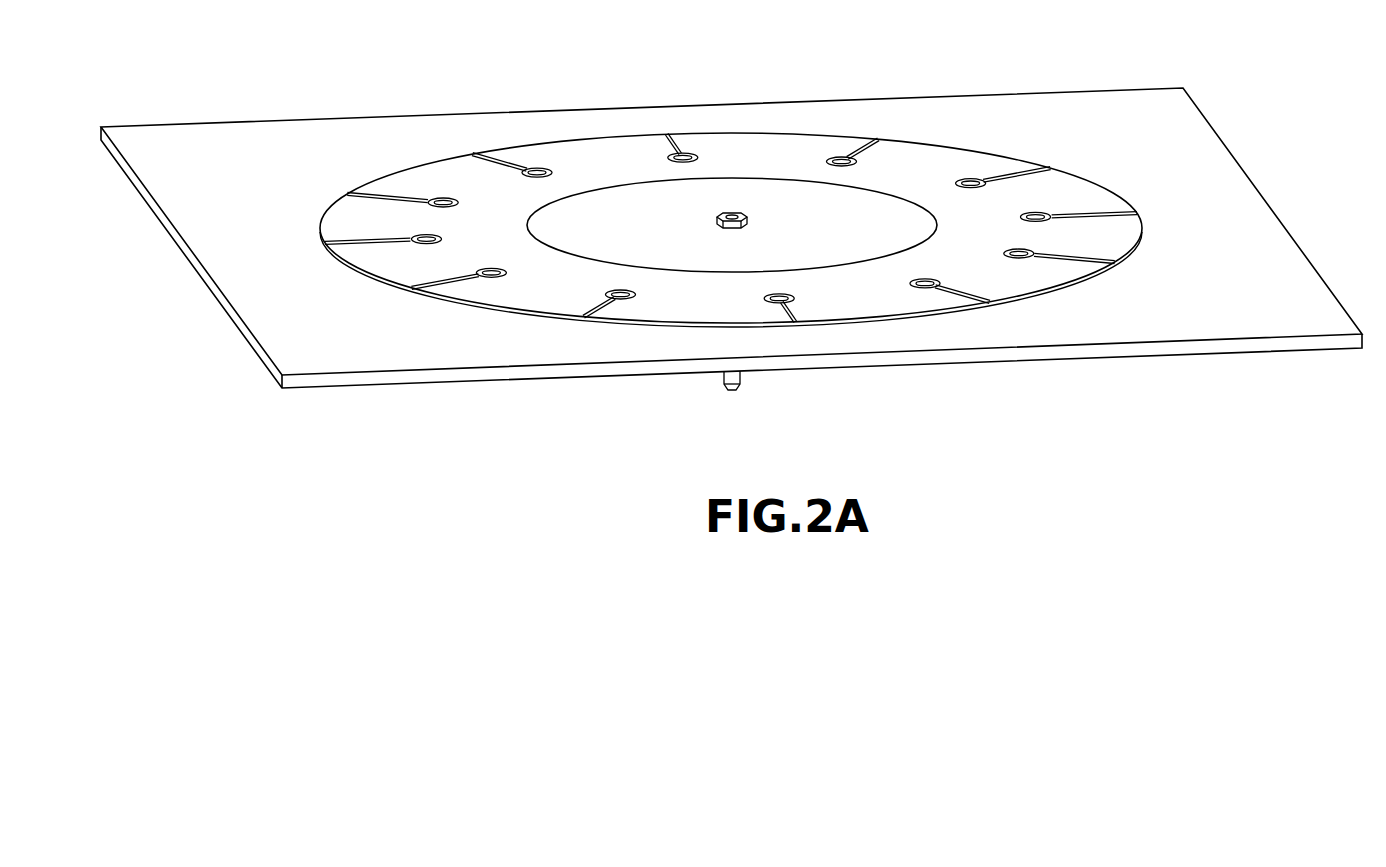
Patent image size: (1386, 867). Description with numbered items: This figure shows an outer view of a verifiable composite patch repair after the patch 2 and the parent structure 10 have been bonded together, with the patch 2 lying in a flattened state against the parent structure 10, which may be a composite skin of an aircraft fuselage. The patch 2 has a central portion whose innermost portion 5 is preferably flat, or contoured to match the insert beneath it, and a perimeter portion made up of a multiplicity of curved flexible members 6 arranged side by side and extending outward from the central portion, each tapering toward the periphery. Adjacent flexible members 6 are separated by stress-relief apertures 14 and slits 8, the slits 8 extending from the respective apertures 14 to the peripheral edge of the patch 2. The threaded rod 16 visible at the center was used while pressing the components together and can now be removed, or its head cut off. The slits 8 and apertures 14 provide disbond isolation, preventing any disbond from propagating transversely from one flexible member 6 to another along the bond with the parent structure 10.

The patch 2 is at (592, 158).
The innermost portion 5 is at (727, 132).
The flexible members 6 is at (827, 158).
The slits 8 is at (603, 303).
The parent structure 10 is at (1125, 104).
The stress-relief apertures 14 is at (780, 295).
The threaded rod 16 is at (745, 215).